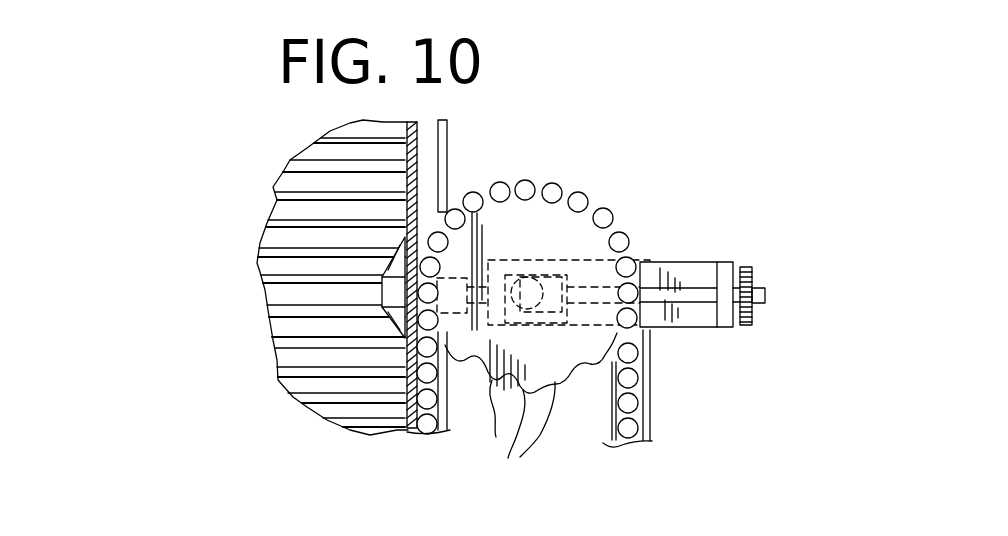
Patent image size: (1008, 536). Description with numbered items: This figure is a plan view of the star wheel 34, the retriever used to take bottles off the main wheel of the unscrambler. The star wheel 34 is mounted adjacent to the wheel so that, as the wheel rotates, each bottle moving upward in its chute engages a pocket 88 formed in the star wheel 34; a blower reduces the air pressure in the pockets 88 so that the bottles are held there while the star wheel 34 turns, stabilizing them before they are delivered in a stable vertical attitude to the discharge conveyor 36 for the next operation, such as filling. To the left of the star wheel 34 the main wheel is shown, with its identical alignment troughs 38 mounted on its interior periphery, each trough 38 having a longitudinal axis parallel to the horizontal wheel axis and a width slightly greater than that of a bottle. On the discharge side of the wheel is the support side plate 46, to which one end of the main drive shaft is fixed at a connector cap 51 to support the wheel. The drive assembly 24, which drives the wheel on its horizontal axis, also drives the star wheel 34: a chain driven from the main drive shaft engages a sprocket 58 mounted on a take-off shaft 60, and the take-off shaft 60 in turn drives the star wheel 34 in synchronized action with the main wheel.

The alignment trough 38 is at (273, 265).
The connector cap 51 is at (383, 298).
The support side plate 46 is at (417, 149).
The star wheel 34 is at (545, 225).
The pocket 88 is at (517, 427).
The discharge conveyor 36 is at (650, 430).
The take-off shaft 60 is at (672, 330).
The drive assembly 24 is at (753, 268).
The sprocket 58 is at (745, 327).